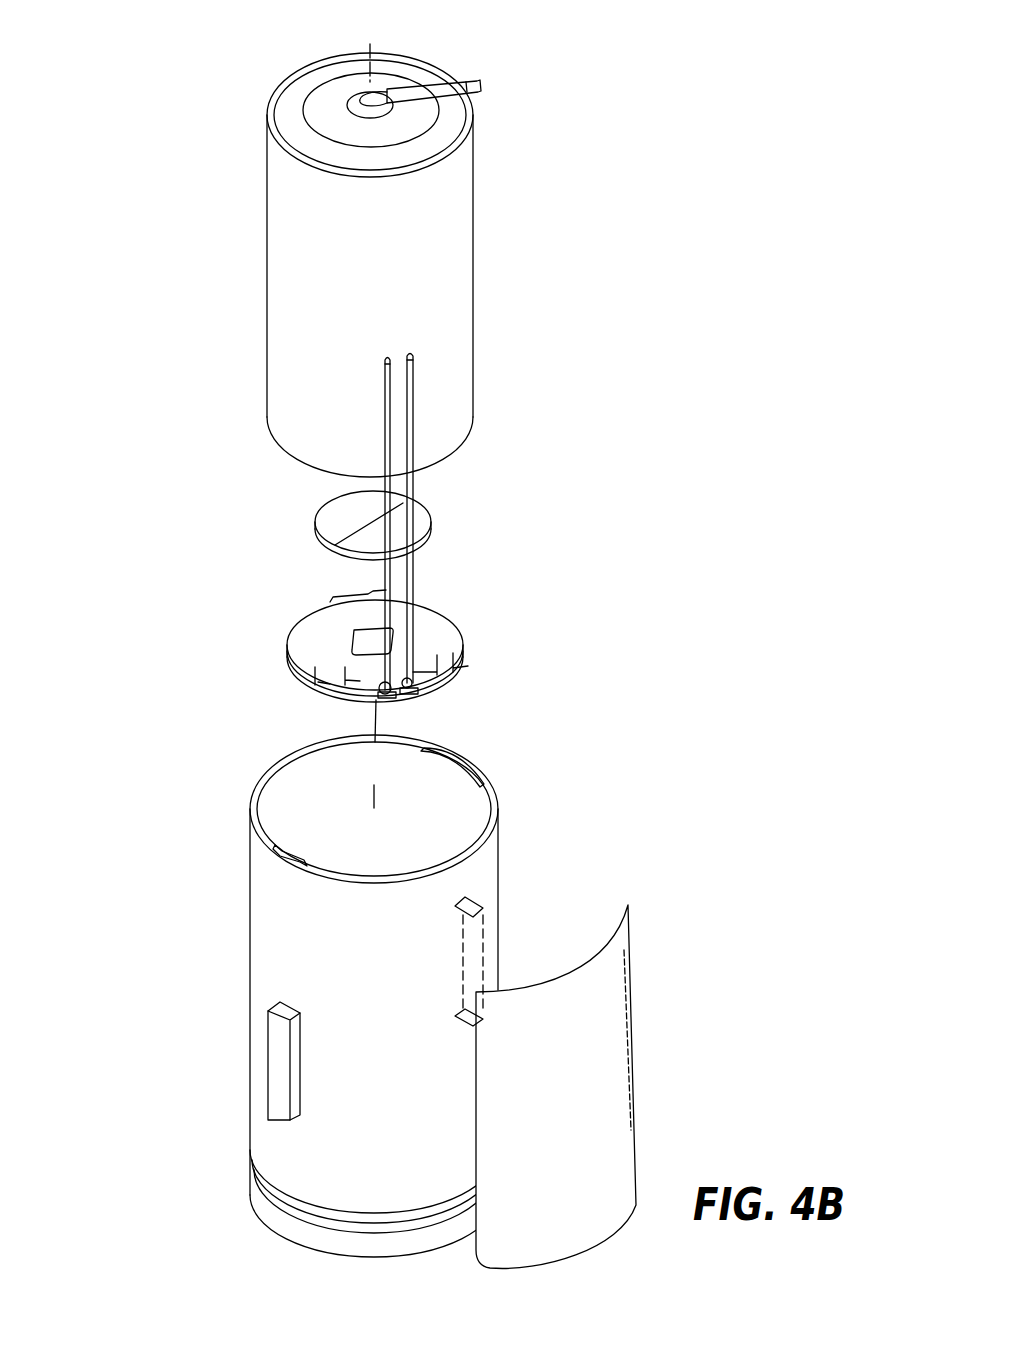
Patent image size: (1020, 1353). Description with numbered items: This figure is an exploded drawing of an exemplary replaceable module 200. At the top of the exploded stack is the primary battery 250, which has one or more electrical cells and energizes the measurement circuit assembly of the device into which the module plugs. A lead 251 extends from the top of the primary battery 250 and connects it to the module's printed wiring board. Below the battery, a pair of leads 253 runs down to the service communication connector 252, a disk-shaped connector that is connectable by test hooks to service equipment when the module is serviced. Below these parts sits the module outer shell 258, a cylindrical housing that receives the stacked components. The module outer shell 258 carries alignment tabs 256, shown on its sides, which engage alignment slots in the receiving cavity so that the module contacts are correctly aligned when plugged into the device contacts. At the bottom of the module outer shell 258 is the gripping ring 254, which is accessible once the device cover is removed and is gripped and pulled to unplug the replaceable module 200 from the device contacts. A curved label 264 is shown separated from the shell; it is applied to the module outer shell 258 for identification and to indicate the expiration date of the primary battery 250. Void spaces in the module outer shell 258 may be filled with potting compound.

The replaceable module 200 is at (706, 226).
The primary battery 250 is at (473, 278).
The leads 251 is at (470, 104).
The service communication connector 252 is at (403, 702).
The leads 253 is at (390, 412).
The gripping ring 254 is at (257, 1198).
The alignment tabs 256 is at (268, 1062).
The module outer shell 258 is at (253, 900).
The label 264 is at (588, 1133).